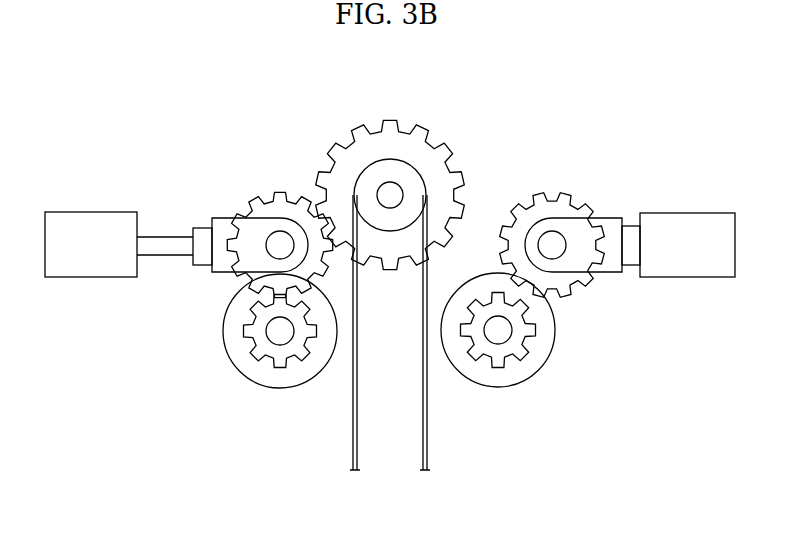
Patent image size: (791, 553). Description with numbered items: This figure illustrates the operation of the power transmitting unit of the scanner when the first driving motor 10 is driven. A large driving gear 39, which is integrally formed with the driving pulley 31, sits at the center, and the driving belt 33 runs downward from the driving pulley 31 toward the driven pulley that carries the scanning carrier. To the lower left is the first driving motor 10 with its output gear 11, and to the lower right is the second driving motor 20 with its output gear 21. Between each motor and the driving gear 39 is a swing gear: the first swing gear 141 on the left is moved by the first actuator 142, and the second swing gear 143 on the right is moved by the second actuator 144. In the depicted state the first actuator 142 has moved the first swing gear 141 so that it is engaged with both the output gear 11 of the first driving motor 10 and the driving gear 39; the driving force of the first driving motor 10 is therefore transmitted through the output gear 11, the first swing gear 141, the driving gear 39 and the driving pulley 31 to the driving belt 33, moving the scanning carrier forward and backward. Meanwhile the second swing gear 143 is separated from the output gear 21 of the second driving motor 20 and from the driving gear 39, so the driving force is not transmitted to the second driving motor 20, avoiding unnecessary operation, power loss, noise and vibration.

The first driving motor 10 is at (255, 372).
The output gear 11 is at (247, 335).
The second driving motor 20 is at (525, 372).
The output gear 21 is at (530, 337).
The driving pulley 31 is at (405, 170).
The driving belt 33 is at (428, 421).
The driving gear 39 is at (400, 122).
The first swing gear 141 is at (266, 192).
The first actuator 142 is at (95, 222).
The second swing gear 143 is at (537, 192).
The second actuator 144 is at (697, 218).